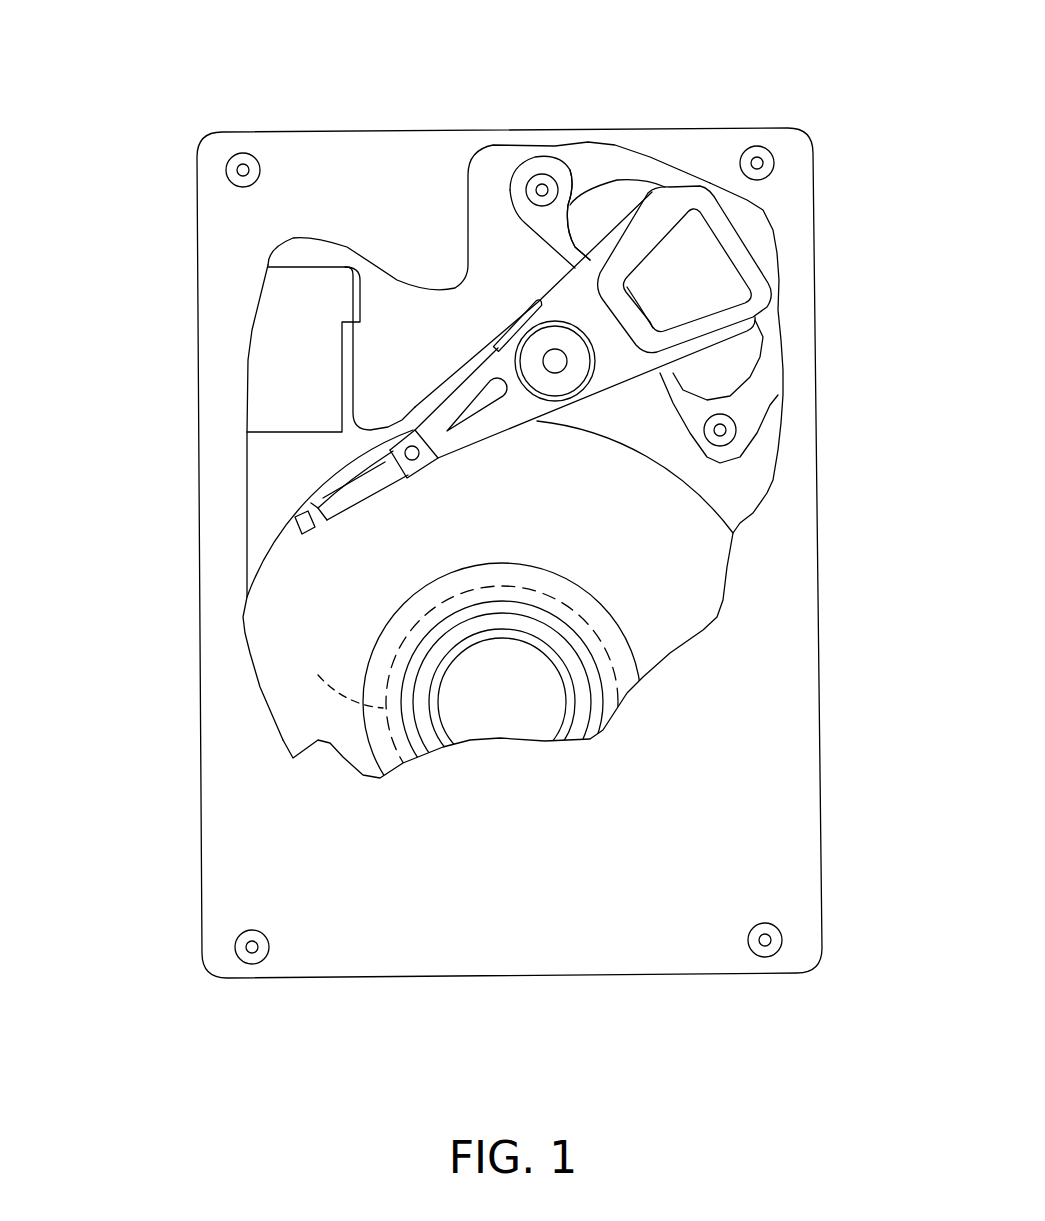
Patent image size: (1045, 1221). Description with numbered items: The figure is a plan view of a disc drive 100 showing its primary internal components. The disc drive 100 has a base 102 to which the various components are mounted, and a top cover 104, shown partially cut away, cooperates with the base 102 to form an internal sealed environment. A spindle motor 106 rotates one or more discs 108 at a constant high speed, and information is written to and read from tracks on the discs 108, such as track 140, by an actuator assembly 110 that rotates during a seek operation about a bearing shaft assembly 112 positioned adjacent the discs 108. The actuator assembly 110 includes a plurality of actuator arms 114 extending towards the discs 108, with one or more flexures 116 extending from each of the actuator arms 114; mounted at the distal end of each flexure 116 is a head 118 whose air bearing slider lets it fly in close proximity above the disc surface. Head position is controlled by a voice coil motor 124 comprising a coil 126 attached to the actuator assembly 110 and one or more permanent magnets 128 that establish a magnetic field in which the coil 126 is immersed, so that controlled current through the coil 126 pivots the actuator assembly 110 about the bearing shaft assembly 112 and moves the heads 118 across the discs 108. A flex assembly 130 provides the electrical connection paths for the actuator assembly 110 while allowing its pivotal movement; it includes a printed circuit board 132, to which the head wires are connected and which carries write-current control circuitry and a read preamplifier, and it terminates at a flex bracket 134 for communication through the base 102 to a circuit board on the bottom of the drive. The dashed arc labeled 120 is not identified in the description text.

The disc drive 100 is at (441, 502).
The base 102 is at (268, 478).
The top cover 104 is at (268, 835).
The spindle motor 106 is at (500, 705).
The disc 108 is at (667, 620).
The actuator assembly 110 is at (533, 427).
The bearing shaft assembly 112 is at (557, 363).
The actuator arm 114 is at (483, 440).
The flexure 116 is at (338, 503).
The head 118 is at (303, 533).
The head path 120 is at (334, 677).
The voice coil motor 124 is at (623, 192).
The coil 126 is at (760, 273).
The permanent magnet 128 is at (583, 220).
The flex assembly 130 is at (457, 368).
The printed circuit board 132 is at (517, 320).
The flex bracket 134 is at (288, 338).
The track 140 is at (585, 590).